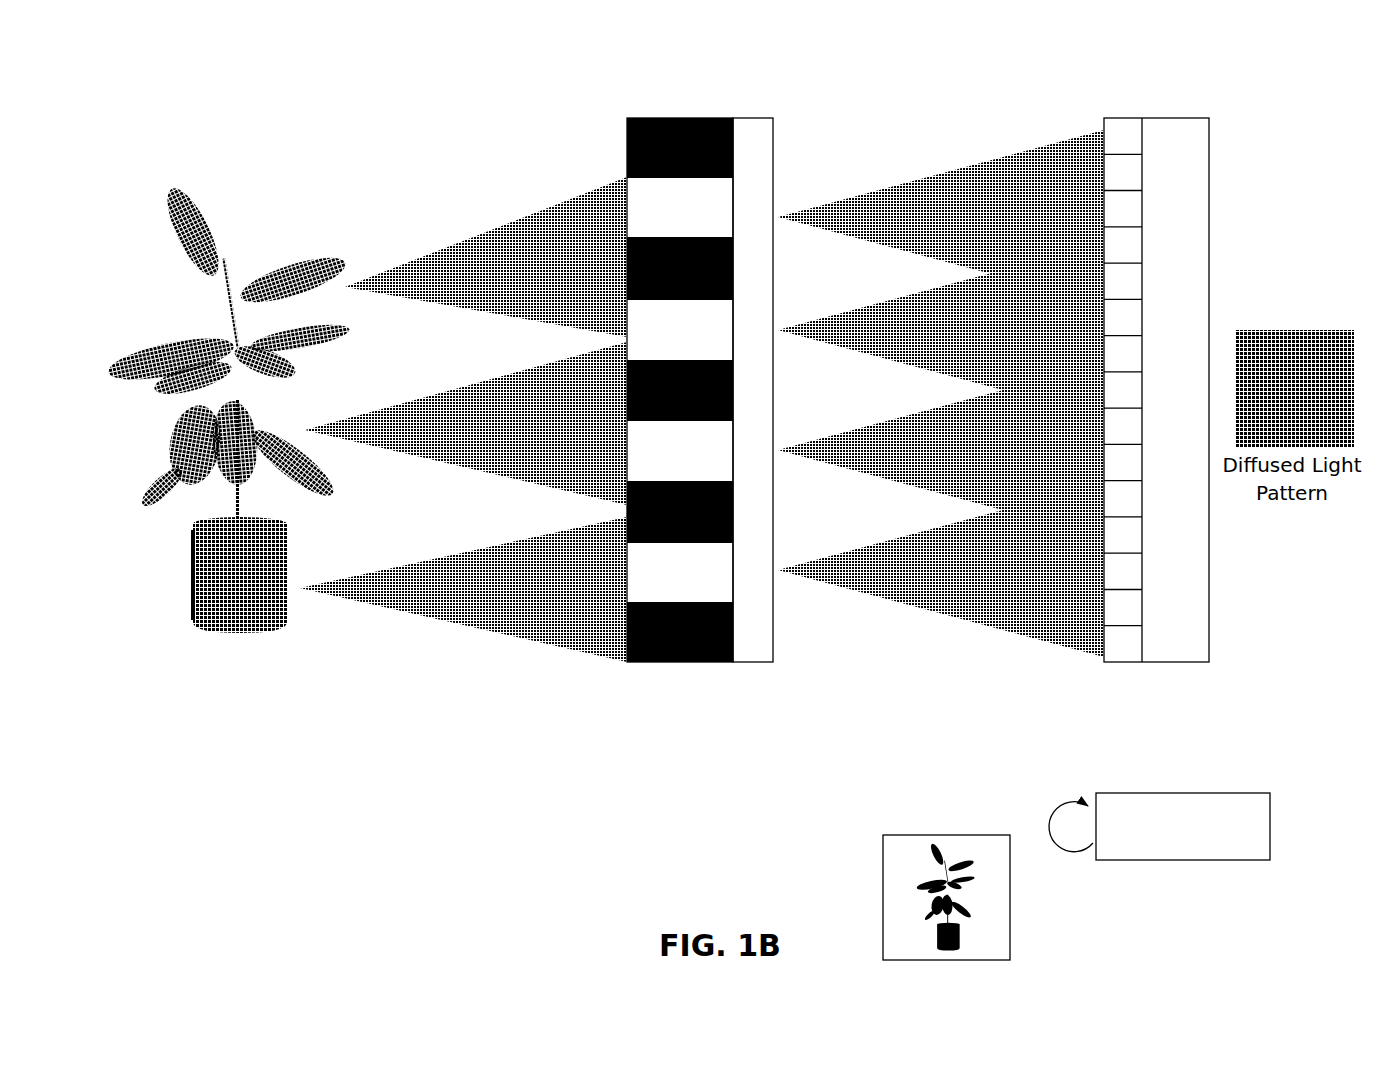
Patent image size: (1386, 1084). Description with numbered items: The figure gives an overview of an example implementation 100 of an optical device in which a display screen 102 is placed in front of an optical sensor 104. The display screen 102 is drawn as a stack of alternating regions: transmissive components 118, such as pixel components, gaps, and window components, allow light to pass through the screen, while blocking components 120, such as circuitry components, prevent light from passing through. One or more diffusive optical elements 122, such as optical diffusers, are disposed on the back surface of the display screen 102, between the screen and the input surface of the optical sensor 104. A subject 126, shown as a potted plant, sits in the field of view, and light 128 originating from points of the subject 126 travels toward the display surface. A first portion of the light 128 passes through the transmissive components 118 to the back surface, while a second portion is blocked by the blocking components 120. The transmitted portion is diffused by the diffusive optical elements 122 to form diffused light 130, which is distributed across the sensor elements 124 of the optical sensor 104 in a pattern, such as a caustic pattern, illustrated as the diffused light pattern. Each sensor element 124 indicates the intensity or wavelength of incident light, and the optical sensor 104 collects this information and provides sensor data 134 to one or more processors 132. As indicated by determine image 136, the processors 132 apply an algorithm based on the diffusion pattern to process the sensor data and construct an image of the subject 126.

The example implementation 100 is at (238, 68).
The display screen 102 is at (649, 456).
The optical sensor 104 is at (1092, 404).
The transmissive components 118 is at (669, 445).
The blocking components 120 is at (625, 527).
The diffusive optical elements 122 is at (753, 627).
The sensor elements 124 is at (1117, 612).
The subject 126 is at (228, 389).
The light 128 is at (463, 419).
The diffused light 130 is at (941, 393).
The processors 132 is at (1159, 826).
The sensor data 134 is at (1178, 664).
The determine image 136 is at (943, 870).